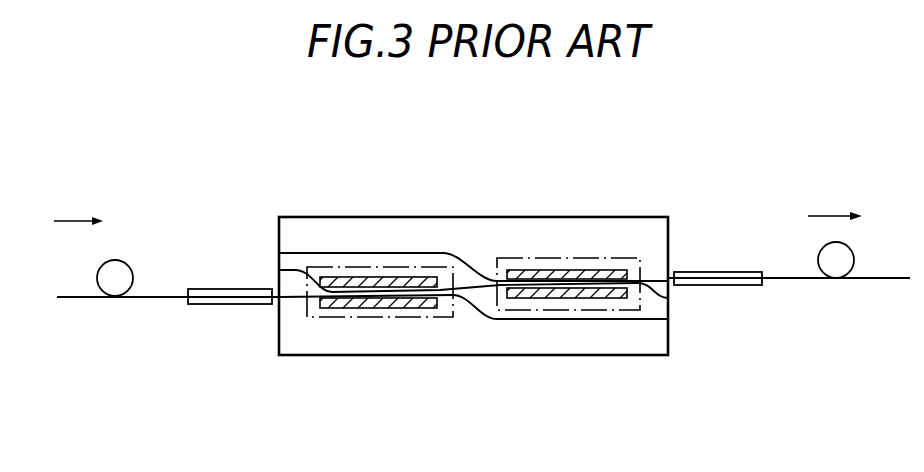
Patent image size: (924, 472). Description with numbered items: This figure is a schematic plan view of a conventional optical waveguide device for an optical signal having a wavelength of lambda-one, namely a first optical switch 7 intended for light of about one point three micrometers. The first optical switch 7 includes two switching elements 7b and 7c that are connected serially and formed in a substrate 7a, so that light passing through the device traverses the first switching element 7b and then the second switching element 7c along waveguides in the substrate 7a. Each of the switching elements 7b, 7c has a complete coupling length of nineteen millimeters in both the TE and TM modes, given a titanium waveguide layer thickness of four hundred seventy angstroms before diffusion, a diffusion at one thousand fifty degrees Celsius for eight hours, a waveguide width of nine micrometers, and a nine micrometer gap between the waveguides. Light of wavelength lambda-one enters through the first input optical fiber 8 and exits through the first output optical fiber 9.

The first optical switch 7 is at (490, 276).
The substrate 7a is at (410, 343).
The switching element 7b is at (310, 312).
The switching element 7c is at (629, 307).
The first input optical fiber 8 is at (218, 289).
The first output optical fiber 9 is at (728, 272).